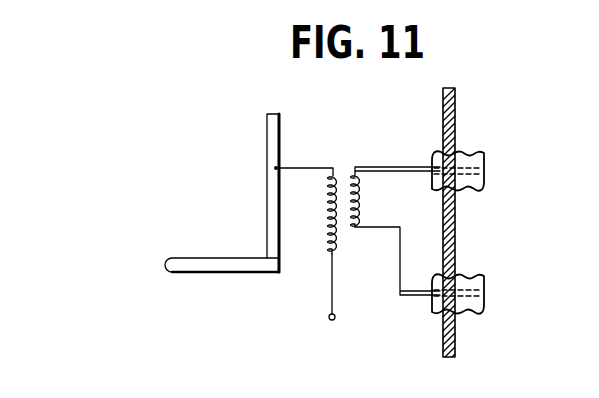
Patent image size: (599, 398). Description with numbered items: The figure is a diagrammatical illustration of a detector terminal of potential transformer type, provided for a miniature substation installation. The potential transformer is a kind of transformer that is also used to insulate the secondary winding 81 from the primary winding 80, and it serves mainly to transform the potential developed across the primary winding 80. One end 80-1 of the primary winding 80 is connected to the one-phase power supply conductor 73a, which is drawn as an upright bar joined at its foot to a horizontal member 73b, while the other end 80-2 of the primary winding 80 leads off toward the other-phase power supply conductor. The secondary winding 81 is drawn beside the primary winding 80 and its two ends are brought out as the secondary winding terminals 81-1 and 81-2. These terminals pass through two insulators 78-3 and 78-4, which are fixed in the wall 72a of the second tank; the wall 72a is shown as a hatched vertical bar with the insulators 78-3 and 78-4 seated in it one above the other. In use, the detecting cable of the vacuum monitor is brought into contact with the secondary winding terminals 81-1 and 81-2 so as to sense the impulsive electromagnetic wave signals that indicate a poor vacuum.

The wall of the second tank 72a is at (447, 103).
The one-phase power supply conductor 73a is at (267, 183).
The horizontal arm of bracket 73b is at (228, 272).
The insulator 78-3 is at (483, 156).
The insulator 78-4 is at (480, 283).
The primary winding 80 is at (330, 212).
The one end of primary winding 80-1 is at (278, 167).
The other end of primary winding 80-2 is at (332, 321).
The secondary winding 81 is at (362, 205).
The secondary winding terminal 81-1 is at (388, 165).
The secondary winding terminal 81-2 is at (418, 296).